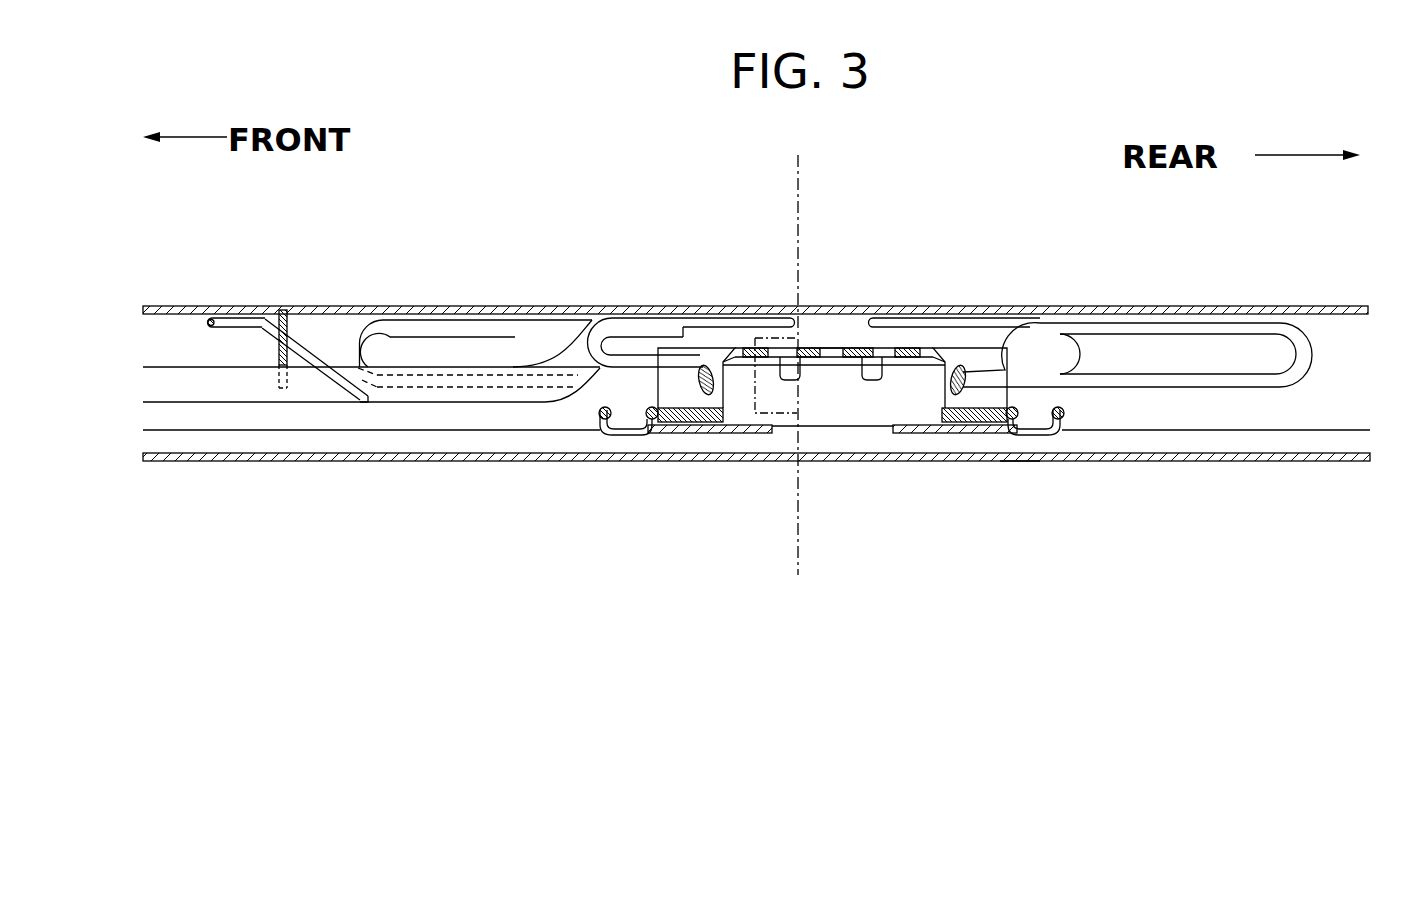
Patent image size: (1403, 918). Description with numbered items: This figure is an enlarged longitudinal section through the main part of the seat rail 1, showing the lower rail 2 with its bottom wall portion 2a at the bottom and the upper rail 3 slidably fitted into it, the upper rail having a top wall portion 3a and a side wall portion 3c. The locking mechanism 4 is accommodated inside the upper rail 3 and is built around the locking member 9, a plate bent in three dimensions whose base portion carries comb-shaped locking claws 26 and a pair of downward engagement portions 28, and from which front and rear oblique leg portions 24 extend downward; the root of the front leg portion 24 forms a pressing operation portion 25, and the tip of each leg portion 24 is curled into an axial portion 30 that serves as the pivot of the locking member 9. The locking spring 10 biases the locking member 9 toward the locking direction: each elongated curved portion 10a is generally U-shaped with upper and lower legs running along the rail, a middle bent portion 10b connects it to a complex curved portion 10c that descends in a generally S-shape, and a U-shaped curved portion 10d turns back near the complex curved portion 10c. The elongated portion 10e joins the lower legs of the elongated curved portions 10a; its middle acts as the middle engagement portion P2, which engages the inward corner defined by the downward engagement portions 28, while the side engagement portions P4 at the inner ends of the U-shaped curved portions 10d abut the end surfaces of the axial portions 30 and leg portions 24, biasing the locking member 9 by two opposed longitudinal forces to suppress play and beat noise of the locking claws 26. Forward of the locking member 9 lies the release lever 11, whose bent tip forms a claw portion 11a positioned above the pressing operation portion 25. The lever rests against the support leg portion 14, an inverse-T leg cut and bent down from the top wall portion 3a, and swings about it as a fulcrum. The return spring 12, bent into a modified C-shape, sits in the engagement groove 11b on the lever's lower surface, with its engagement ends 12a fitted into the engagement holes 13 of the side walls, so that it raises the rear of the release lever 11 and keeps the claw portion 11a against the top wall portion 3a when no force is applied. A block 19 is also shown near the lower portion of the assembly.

The seat rail 1 is at (756, 398).
The lower rail 2 is at (432, 464).
The bottom wall portion 2a is at (1017, 462).
The upper rail 3 is at (1130, 305).
The top wall portion 3a is at (852, 349).
The side wall portion 3c is at (490, 350).
The locking mechanism 4 is at (793, 172).
The locking member 9 is at (820, 285).
The locking spring 10 is at (924, 441).
The elongated curved portion 10a is at (437, 318).
The middle bent portion 10b is at (760, 318).
The complex curved portion 10c is at (648, 374).
The U-shaped curved portion 10d is at (627, 432).
The elongated portion 10e is at (848, 385).
The release lever 11 is at (290, 405).
The claw portion 11a is at (606, 318).
The engagement groove 11b is at (364, 400).
The return spring 12 is at (258, 376).
The engagement end 12a is at (210, 328).
The engagement hole 13 is at (211, 322).
The support leg portion 14 is at (277, 365).
The spacer block 19 is at (690, 422).
The leg portion 24 is at (670, 396).
The pressing operation portion 25 is at (688, 342).
The locking claw 26 is at (742, 350).
The downward engagement portion 28 is at (790, 378).
The axial portion 30 is at (698, 432).
The middle engagement portion P2 is at (838, 350).
The side engagement portion P4 is at (662, 432).